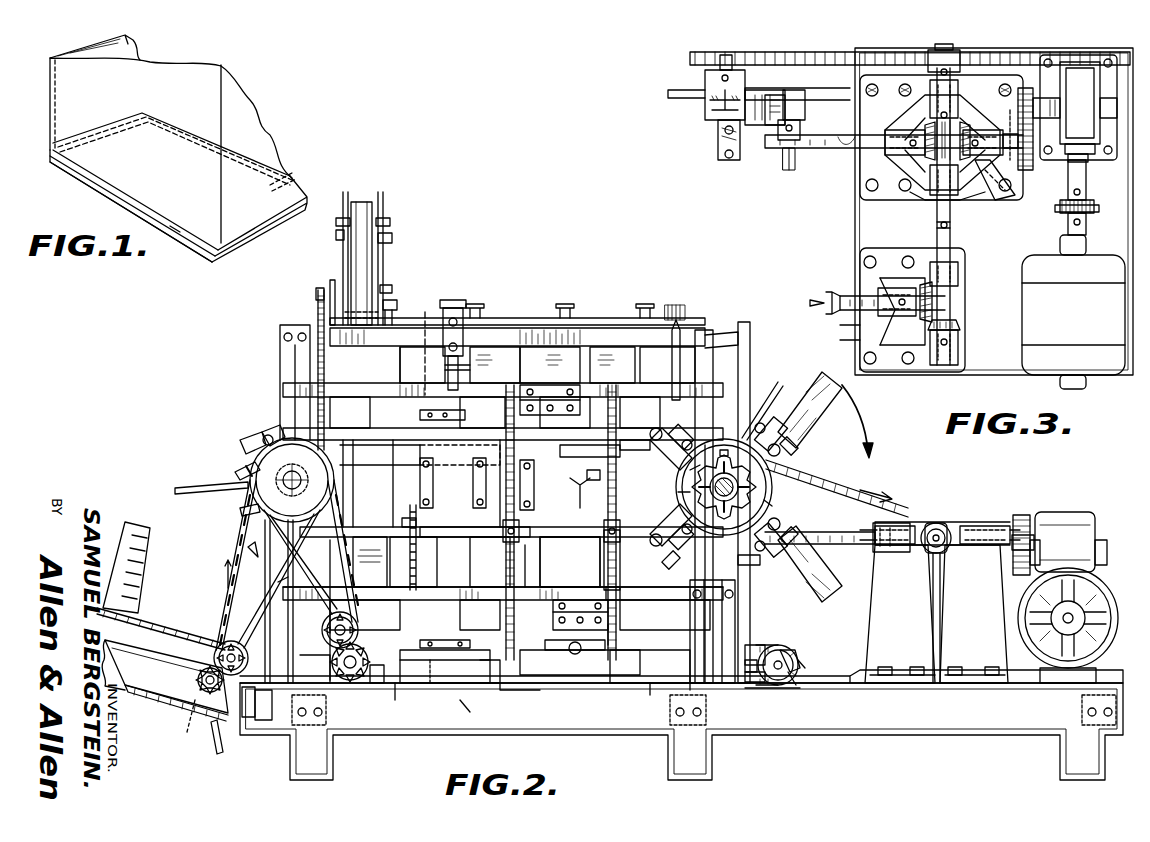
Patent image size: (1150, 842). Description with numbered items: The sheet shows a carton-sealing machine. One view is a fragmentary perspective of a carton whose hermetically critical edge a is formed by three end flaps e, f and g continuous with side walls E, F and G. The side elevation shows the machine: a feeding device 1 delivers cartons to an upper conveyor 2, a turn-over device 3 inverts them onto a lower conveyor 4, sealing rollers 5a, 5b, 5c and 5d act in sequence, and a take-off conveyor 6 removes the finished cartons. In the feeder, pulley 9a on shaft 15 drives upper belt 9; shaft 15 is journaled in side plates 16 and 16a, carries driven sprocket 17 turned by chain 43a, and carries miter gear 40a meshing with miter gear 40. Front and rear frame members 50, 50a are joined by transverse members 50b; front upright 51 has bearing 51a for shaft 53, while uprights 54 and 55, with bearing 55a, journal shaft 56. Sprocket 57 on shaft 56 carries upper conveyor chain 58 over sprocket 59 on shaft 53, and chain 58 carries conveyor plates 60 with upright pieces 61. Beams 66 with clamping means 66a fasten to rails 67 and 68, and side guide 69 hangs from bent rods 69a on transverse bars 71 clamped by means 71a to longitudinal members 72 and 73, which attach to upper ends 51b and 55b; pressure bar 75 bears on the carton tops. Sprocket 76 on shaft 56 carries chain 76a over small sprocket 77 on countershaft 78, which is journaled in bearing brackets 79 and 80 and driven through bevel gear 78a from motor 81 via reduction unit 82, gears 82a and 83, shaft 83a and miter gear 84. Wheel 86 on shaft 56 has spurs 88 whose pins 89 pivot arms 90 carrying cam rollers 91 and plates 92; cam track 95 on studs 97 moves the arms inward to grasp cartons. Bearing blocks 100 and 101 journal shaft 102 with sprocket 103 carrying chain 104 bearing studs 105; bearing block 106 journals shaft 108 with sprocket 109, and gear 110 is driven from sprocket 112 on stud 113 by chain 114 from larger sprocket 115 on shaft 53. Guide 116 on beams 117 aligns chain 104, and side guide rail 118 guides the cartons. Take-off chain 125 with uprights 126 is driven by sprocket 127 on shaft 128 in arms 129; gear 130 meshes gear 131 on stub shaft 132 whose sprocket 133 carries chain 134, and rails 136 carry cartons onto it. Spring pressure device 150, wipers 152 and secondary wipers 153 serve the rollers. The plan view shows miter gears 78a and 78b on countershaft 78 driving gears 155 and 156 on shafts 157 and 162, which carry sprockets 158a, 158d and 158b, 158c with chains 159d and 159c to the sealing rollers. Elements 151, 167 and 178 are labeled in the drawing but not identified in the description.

In FIG. 1, the side wall E is at (146, 150).
In FIG. 1, the side wall F is at (70, 44).
In FIG. 1, the side wall G is at (170, 80).
In FIG. 1, the critical edge a is at (133, 186).
In FIG. 1, the end flap e is at (48, 148).
In FIG. 1, the end flap g is at (285, 183).
In FIG. 1, the end flap f is at (176, 230).
In FIG. 2, the feeding or loading device 1 is at (368, 220).
In FIG. 3, the upper conveyor 2 is at (845, 303).
In FIG. 2, the upper conveyor 2 is at (240, 440).
In FIG. 2, the turn-over or inverting device 3 is at (790, 435).
In FIG. 2, the lower conveyor 4 is at (282, 353).
In FIG. 2, the sealing roller 5a is at (420, 446).
In FIG. 2, the sealing roller 5b is at (578, 448).
In FIG. 2, the sealing roller 5c is at (605, 645).
In FIG. 2, the sealing roller 5d is at (455, 700).
In FIG. 2, the take-off conveyor 6 is at (426, 317).
In FIG. 2, the upper belt 9 is at (365, 205).
In FIG. 2, the pulley 9a is at (388, 280).
In FIG. 2, the shaft 15 is at (332, 275).
In FIG. 2, the side plate 16 is at (340, 238).
In FIG. 2, the side plate 16a is at (388, 240).
In FIG. 2, the driven sprocket 17 is at (318, 290).
In FIG. 2, the miter gear 40 is at (395, 318).
In FIG. 2, the miter gear 40a is at (392, 305).
In FIG. 2, the chain 43a is at (318, 305).
In FIG. 3, the front frame member 50 is at (845, 333).
In FIG. 2, the front frame member 50 is at (445, 735).
In FIG. 3, the rear frame member 50a is at (700, 110).
In FIG. 2, the transverse members 50b is at (330, 758).
In FIG. 2, the front upright 51 is at (278, 583).
In FIG. 2, the bearing 51a is at (255, 465).
In FIG. 2, the upper end of upright 51b is at (286, 325).
In FIG. 2, the shaft 53 is at (248, 470).
In FIG. 2, the upright member 54 is at (740, 607).
In FIG. 3, the upright member 55 is at (705, 78).
In FIG. 2, the upright member 55 is at (745, 565).
In FIG. 3, the bearing 55a is at (786, 102).
In FIG. 3, the upper end of upright 55b is at (705, 92).
In FIG. 2, the upper end of upright 55b is at (738, 338).
In FIG. 3, the shaft 56 is at (712, 148).
In FIG. 2, the shaft 56 is at (740, 487).
In FIG. 2, the sprocket 57 is at (678, 496).
In FIG. 2, the upper conveyor chain 58 is at (272, 435).
In FIG. 2, the left-hand sprocket 59 is at (262, 432).
In FIG. 2, the conveyor plates 60 is at (255, 452).
In FIG. 2, the upright pieces 61 is at (180, 470).
In FIG. 2, the transverse bars or beams 66 is at (575, 488).
In FIG. 2, the clamping means 66a is at (422, 478).
In FIG. 2, the frame member or rail 67 is at (565, 502).
In FIG. 2, the frame member or rail 68 is at (598, 508).
In FIG. 2, the side guide 69 is at (410, 380).
In FIG. 2, the bent rod 69a is at (460, 368).
In FIG. 2, the transverse bars 71 is at (452, 305).
In FIG. 2, the clamping means 71a is at (463, 318).
In FIG. 2, the longitudinal frame member 72 is at (495, 322).
In FIG. 3, the longitudinal frame member 73 is at (705, 115).
In FIG. 2, the longitudinal frame member 73 is at (714, 328).
In FIG. 2, the adjustable pressure bar 75 is at (585, 318).
In FIG. 3, the sprocket 76 is at (690, 56).
In FIG. 3, the chain 76a is at (905, 88).
In FIG. 2, the chain 76a is at (918, 520).
In FIG. 3, the small sprocket 77 is at (962, 64).
In FIG. 3, the countershaft 78 is at (940, 223).
In FIG. 2, the countershaft 78 is at (930, 555).
In FIG. 3, the bevel gear 78a is at (965, 120).
In FIG. 3, the miter gear 78b is at (950, 326).
In FIG. 3, the multiple bearing bracket 79 is at (962, 200).
In FIG. 2, the multiple bearing bracket 79 is at (998, 577).
In FIG. 3, the multiple bearing bracket 80 is at (895, 265).
In FIG. 2, the multiple bearing bracket 80 is at (900, 614).
In FIG. 3, the motor 81 is at (1073, 312).
In FIG. 2, the motor 81 is at (1090, 570).
In FIG. 3, the reduction unit 82 is at (1075, 112).
In FIG. 2, the reduction unit 82 is at (1075, 520).
In FIG. 3, the gear 82a is at (1034, 88).
In FIG. 2, the gear 82a is at (1010, 572).
In FIG. 3, the gear 83 is at (1030, 166).
In FIG. 2, the gear 83 is at (1028, 518).
In FIG. 3, the shaft 83a is at (990, 196).
In FIG. 3, the miter gear 84 is at (1010, 198).
In FIG. 2, the miter gear 84 is at (968, 522).
In FIG. 2, the wheel 86 is at (772, 505).
In FIG. 2, the spurs 88 is at (720, 503).
In FIG. 2, the pins 89 is at (717, 457).
In FIG. 2, the arms 90 is at (760, 428).
In FIG. 2, the cam rollers 91 is at (690, 478).
In FIG. 2, the plates 92 is at (778, 448).
In FIG. 2, the cam plate or track 95 is at (800, 458).
In FIG. 2, the studs 97 is at (724, 440).
In FIG. 2, the bearing block 100 is at (755, 683).
In FIG. 3, the bearing block 101 is at (775, 115).
In FIG. 3, the shaft 102 is at (782, 165).
In FIG. 2, the shaft 102 is at (790, 670).
In FIG. 2, the sprocket 103 is at (800, 665).
In FIG. 2, the chain 104 is at (788, 683).
In FIG. 2, the upstanding pins or studs 105 is at (798, 660).
In FIG. 2, the bearing block 106 is at (332, 678).
In FIG. 2, the shaft 108 is at (362, 684).
In FIG. 2, the sprocket 109 is at (368, 650).
In FIG. 2, the gear 110 is at (380, 678).
In FIG. 2, the sprocket 112 is at (345, 610).
In FIG. 2, the stud 113 is at (346, 628).
In FIG. 2, the chain 114 is at (335, 540).
In FIG. 2, the larger sprocket 115 is at (250, 518).
In FIG. 2, the channel or guide 116 is at (755, 646).
In FIG. 2, the brackets or beams 117 is at (690, 695).
In FIG. 2, the side guide rail 118 is at (503, 590).
In FIG. 2, the take-off conveyor chain 125 is at (158, 656).
In FIG. 2, the uprights 126 is at (145, 590).
In FIG. 2, the sprocket 127 is at (200, 658).
In FIG. 2, the shaft 128 is at (198, 677).
In FIG. 2, the brackets or arms 129 is at (182, 715).
In FIG. 2, the gear 130 is at (218, 735).
In FIG. 2, the gear 131 is at (256, 650).
In FIG. 2, the stub shaft 132 is at (246, 720).
In FIG. 2, the sprocket 133 is at (224, 628).
In FIG. 2, the chain 134 is at (250, 550).
In FIG. 2, the rails 136 is at (292, 700).
In FIG. 2, the adjustable spring pressure device 150 is at (455, 412).
In FIG. 2, the plate 151 is at (548, 390).
In FIG. 2, the flat spring members 152 is at (600, 432).
In FIG. 2, the secondary wiping means 153 is at (630, 432).
In FIG. 3, the gear 155 is at (915, 200).
In FIG. 3, the miter gear 156 is at (950, 288).
In FIG. 3, the shaft 157 is at (822, 158).
In FIG. 2, the shaft 157 is at (805, 505).
In FIG. 2, the large sprocket 158a is at (500, 513).
In FIG. 2, the sprocket 158b is at (610, 578).
In FIG. 2, the sprocket 158c is at (540, 552).
In FIG. 2, the sprocket 158d is at (405, 514).
In FIG. 2, the chain 159c is at (528, 575).
In FIG. 2, the chain 159d is at (407, 578).
In FIG. 3, the shaft 162 is at (842, 292).
In FIG. 2, the shaft 162 is at (858, 552).
In FIG. 2, the bolt 167 is at (652, 695).
In FIG. 2, the bar 178 is at (590, 478).